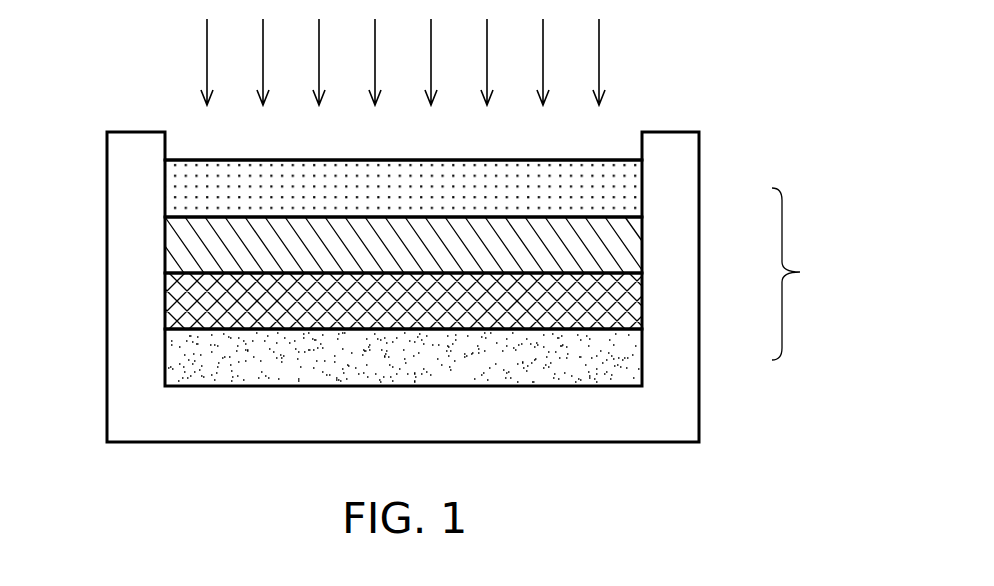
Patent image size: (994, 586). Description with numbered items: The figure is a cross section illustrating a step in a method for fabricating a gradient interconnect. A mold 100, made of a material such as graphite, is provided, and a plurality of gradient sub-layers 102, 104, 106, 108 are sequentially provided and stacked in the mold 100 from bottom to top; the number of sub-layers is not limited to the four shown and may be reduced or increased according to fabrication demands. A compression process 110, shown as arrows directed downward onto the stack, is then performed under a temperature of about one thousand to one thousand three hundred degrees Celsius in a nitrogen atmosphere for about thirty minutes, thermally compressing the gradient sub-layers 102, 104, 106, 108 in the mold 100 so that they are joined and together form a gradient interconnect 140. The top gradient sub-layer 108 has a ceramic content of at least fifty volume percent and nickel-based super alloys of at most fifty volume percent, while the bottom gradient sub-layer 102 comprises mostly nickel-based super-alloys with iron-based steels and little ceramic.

The mold 100 is at (683, 413).
The gradient sub-layer 102 is at (638, 357).
The gradient sub-layer 104 is at (638, 300).
The gradient sub-layer 106 is at (638, 245).
The gradient sub-layer 108 is at (638, 187).
The compression process 110 is at (600, 47).
The gradient interconnect 140 is at (812, 274).